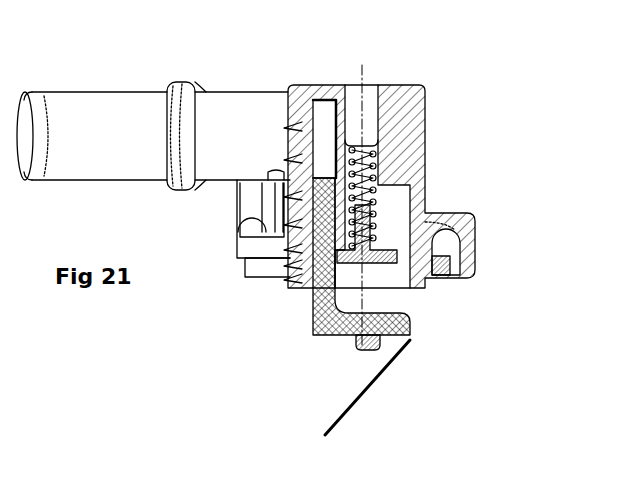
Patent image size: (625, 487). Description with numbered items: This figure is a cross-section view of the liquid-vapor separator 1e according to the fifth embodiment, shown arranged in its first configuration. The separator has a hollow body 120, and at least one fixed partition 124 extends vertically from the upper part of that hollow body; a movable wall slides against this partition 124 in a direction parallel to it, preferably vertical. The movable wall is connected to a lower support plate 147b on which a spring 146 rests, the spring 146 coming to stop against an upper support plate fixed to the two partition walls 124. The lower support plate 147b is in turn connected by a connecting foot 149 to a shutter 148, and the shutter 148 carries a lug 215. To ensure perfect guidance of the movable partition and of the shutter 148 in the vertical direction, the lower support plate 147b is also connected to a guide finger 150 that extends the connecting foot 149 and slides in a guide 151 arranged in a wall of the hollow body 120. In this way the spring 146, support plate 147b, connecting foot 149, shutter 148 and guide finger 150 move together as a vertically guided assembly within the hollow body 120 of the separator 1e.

The valve assembly 1e is at (446, 75).
The fixed partition 124 is at (403, 165).
The spring 146 is at (378, 195).
The hollow body 120 is at (400, 223).
The lower support plate 147b is at (378, 258).
The guide 151 is at (318, 100).
The guide finger 150 is at (327, 225).
The connecting foot 149 is at (322, 307).
The shutter 148 is at (352, 336).
The lug 215 is at (372, 385).